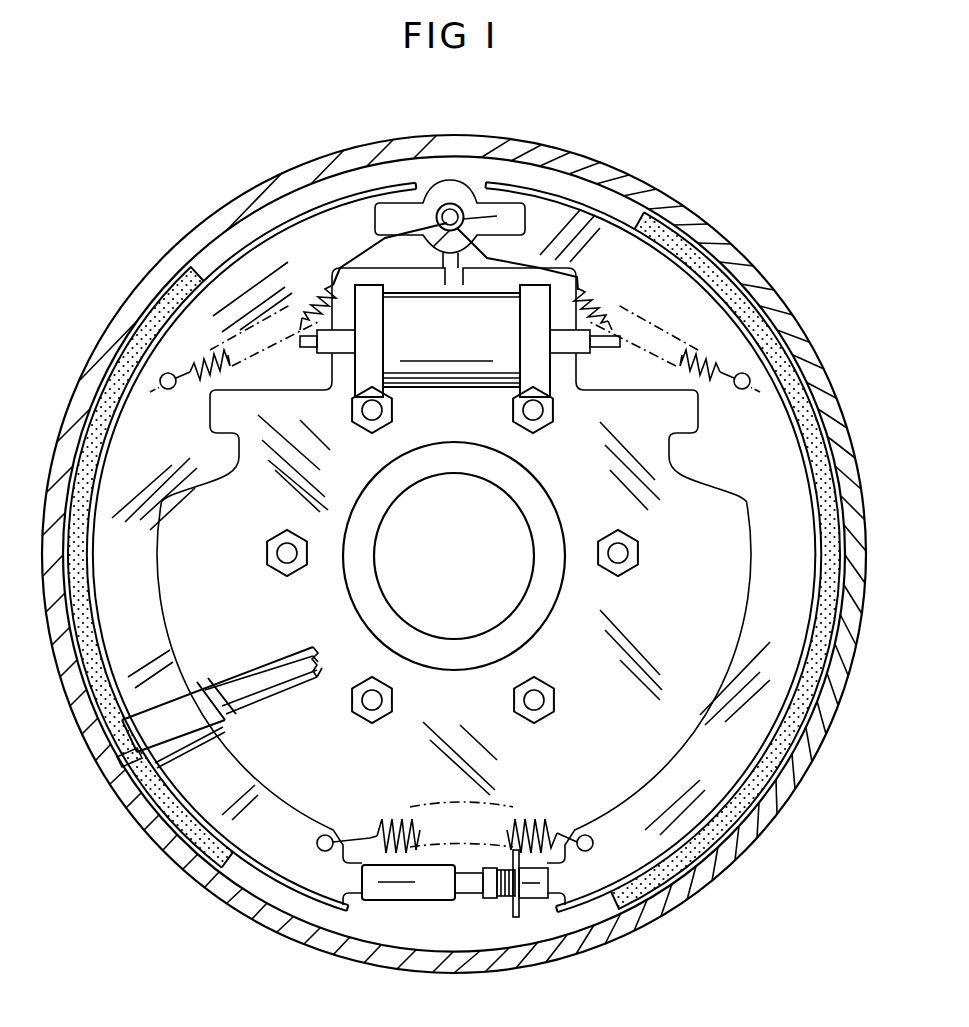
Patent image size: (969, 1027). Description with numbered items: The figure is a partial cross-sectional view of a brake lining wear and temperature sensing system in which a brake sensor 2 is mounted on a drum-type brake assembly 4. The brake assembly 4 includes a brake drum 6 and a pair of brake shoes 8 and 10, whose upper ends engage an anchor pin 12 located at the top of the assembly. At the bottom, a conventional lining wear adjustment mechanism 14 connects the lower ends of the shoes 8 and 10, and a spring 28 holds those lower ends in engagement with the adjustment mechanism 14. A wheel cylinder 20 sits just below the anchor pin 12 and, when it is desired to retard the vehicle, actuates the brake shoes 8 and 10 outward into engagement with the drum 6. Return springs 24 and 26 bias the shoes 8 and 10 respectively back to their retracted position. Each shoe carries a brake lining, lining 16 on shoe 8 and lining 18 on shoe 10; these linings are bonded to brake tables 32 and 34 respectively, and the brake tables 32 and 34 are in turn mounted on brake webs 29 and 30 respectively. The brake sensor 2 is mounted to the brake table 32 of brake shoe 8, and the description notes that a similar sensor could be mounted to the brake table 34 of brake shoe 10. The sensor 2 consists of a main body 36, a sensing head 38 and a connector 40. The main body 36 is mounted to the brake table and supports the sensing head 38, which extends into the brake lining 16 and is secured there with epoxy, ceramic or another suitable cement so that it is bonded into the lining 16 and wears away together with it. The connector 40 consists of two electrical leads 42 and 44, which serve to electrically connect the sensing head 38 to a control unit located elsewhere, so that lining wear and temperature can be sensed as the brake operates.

The brake sensor 2 is at (204, 674).
The brake assembly 4 is at (640, 158).
The brake drum 6 is at (200, 240).
The brake shoe 8 is at (122, 586).
The brake shoe 10 is at (788, 590).
The anchor pin 12 is at (451, 204).
The lining wear adjustment mechanism 14 is at (420, 882).
The brake lining 16 is at (155, 322).
The brake lining 18 is at (727, 295).
The wheel cylinder 20 is at (470, 340).
The return spring 24 is at (307, 290).
The return spring 26 is at (612, 292).
The spring 28 is at (545, 822).
The brake web 29 is at (160, 548).
The brake web 30 is at (748, 527).
The brake table 32 is at (258, 896).
The brake table 34 is at (588, 908).
The main body 36 is at (228, 727).
The sensing head 38 is at (138, 752).
The connector 40 is at (283, 682).
The electrical lead 42 is at (318, 663).
The electrical lead 44 is at (310, 648).